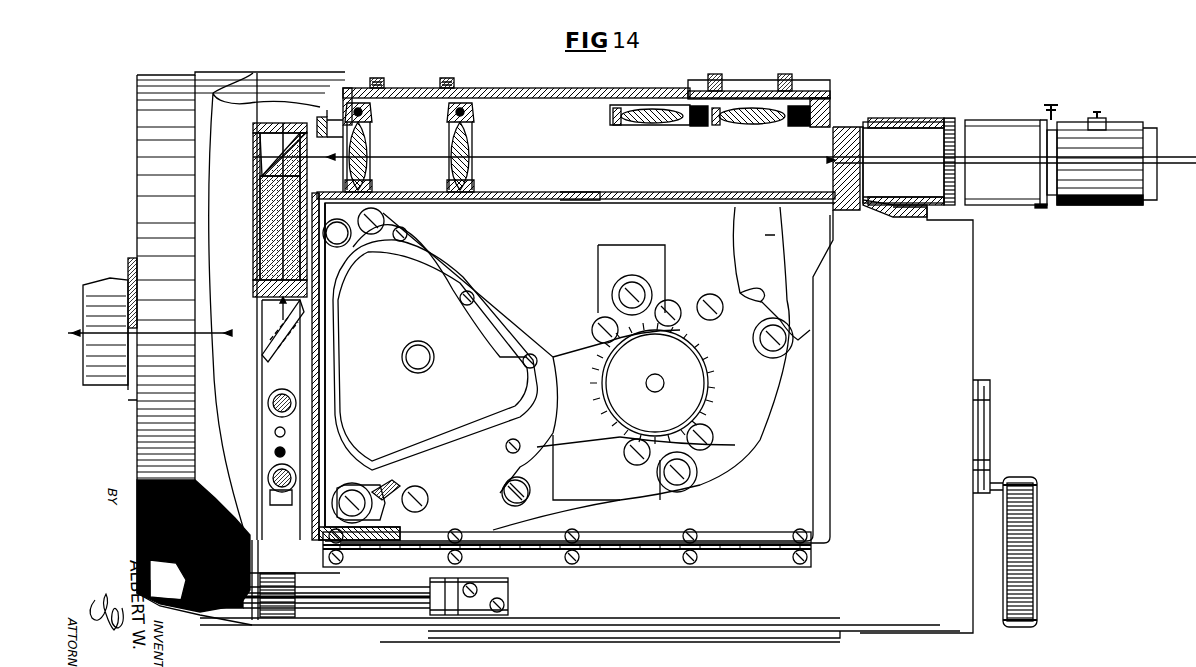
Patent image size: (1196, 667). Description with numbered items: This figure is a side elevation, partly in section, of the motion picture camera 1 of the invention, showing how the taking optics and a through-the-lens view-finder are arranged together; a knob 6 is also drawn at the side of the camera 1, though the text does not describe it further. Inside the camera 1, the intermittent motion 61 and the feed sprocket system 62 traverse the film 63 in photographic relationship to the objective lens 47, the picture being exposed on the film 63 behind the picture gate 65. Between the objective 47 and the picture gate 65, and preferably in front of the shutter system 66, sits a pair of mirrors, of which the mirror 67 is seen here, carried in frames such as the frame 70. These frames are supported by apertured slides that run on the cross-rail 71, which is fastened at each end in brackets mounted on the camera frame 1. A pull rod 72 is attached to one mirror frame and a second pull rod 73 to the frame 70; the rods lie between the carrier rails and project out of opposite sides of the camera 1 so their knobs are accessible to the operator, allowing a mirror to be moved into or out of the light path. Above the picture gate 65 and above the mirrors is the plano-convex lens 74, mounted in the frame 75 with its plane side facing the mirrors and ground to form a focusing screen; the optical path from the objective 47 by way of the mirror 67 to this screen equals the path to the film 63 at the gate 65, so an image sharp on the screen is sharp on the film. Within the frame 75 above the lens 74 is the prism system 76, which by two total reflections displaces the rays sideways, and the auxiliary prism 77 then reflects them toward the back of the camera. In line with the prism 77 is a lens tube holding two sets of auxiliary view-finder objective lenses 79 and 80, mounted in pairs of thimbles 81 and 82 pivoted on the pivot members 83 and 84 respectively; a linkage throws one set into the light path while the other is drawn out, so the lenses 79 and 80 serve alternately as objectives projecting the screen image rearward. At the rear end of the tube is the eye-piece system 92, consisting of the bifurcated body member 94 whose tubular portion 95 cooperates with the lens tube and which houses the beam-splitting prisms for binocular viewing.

The camera 1 is at (963, 282).
The knurled adjusting knob 6 is at (1025, 479).
The objective lens 47 is at (96, 294).
The intermittent motion 61 is at (412, 280).
The feed sprocket system 62 is at (709, 370).
The film 63 is at (779, 235).
The picture gate 65 is at (333, 313).
The shutter system 66 is at (320, 345).
The mirror 67 is at (258, 353).
The frame 70 is at (264, 368).
The cross-rail 71 is at (268, 403).
The pull rod 72 is at (274, 452).
The pull rod 73 is at (275, 432).
The plano-convex lens 74 is at (255, 286).
The frame 75 is at (258, 194).
The prism system 76 is at (265, 228).
The auxiliary prism 77 is at (258, 152).
The auxiliary view-finder objective lenses 79 is at (444, 141).
The auxiliary view-finder objective lenses 80 is at (657, 124).
The thimbles 81 is at (442, 187).
The thimbles 82 is at (618, 126).
The pivot members 83 is at (448, 110).
The pivot members 84 is at (698, 126).
The eye-piece system 92 is at (1041, 208).
The bifurcated body member 94 is at (997, 114).
The tubular portion 95 is at (915, 128).